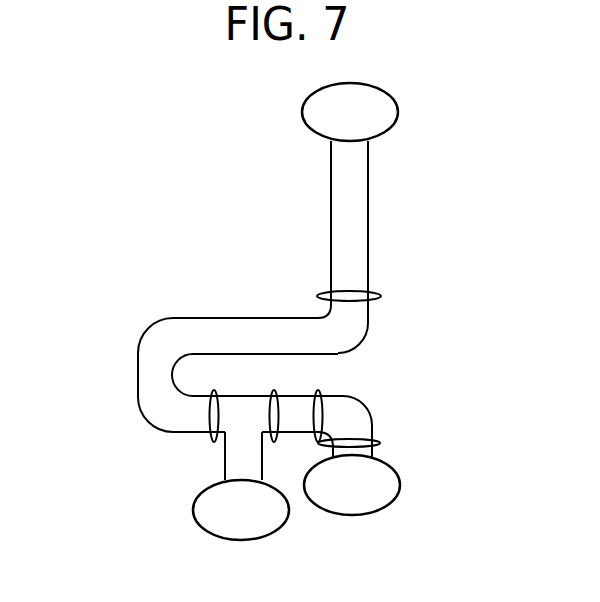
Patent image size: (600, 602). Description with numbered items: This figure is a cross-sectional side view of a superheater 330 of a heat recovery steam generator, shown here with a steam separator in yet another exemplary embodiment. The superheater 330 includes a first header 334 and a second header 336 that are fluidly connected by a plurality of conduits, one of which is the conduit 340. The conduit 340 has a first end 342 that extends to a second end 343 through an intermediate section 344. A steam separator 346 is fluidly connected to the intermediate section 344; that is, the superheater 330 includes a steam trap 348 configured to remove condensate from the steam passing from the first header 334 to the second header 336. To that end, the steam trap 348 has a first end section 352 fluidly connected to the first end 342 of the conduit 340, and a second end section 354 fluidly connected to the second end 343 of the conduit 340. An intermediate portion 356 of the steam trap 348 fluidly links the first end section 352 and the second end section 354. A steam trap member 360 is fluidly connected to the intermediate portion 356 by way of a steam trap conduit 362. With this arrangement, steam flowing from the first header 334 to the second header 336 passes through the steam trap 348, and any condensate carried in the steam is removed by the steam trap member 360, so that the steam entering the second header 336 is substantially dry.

The superheater 330 is at (271, 310).
The first header 334 is at (390, 91).
The second header 336 is at (403, 482).
The conduit 340 is at (388, 292).
The first end 342 is at (372, 142).
The second end 343 is at (375, 450).
The intermediate section 344 is at (330, 252).
The steam separator 346 is at (188, 303).
The steam trap 348 is at (140, 356).
The first end section 352 is at (370, 315).
The second end section 354 is at (373, 420).
The intermediate portion 356 is at (138, 394).
The steam trap member 360 is at (194, 510).
The steam trap conduit 362 is at (224, 457).